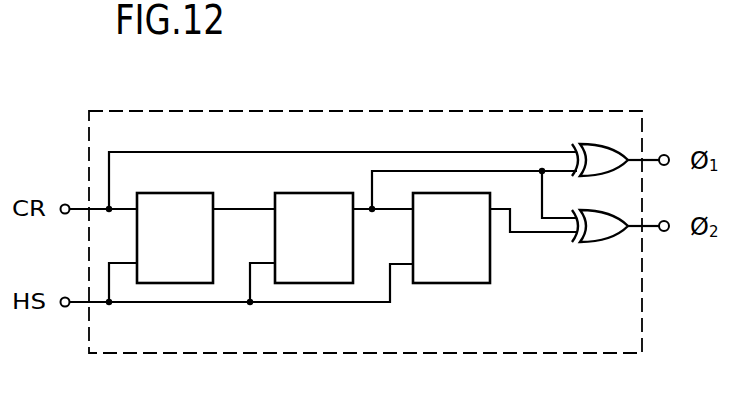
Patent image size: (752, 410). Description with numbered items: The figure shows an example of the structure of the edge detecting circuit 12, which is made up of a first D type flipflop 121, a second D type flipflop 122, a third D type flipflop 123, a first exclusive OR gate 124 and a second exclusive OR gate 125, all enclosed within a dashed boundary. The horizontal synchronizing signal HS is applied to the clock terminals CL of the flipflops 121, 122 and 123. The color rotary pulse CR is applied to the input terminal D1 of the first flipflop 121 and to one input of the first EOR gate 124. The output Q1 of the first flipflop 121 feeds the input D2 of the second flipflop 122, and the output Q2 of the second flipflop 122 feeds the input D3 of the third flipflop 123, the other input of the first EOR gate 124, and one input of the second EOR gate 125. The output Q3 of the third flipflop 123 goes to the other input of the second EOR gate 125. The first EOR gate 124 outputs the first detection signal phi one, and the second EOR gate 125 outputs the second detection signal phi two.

The edge detecting circuit 12 is at (155, 109).
The first D type flipflop 121 is at (213, 250).
The second D type flipflop 122 is at (353, 250).
The third D type flipflop 123 is at (490, 250).
The first exclusive OR gate 124 is at (597, 144).
The second exclusive OR gate 125 is at (600, 242).